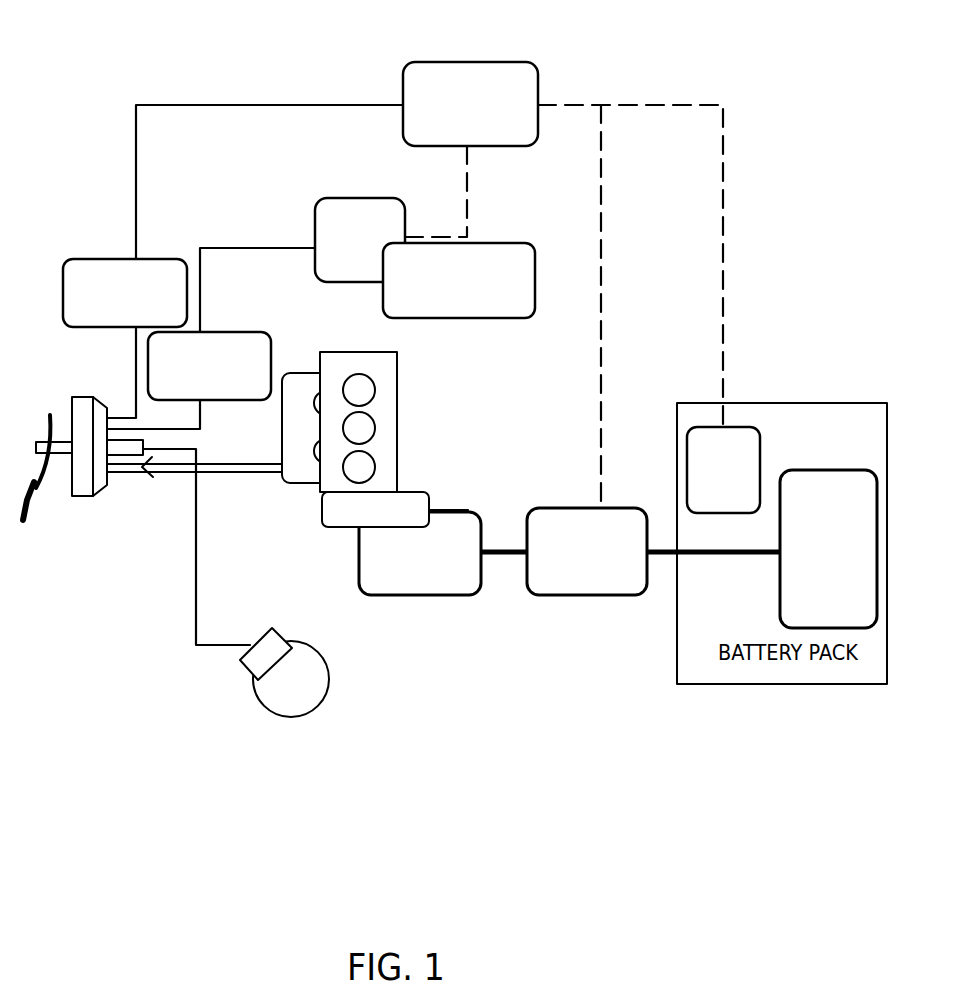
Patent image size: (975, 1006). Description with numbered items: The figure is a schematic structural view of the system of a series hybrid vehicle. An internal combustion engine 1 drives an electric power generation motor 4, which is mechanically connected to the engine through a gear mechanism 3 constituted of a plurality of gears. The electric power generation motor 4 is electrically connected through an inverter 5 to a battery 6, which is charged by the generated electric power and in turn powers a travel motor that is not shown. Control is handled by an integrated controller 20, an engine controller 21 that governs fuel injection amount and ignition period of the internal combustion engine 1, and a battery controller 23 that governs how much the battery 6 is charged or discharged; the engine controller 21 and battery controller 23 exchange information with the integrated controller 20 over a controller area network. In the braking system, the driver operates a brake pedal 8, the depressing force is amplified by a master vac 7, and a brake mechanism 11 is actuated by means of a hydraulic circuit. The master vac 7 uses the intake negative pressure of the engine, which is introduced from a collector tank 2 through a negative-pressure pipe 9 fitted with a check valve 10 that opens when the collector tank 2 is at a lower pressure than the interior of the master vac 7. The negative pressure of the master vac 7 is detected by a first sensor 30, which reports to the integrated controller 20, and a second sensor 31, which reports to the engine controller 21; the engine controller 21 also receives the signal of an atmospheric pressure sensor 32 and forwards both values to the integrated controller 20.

The internal combustion engine 1 is at (398, 370).
The collector tank 2 is at (298, 488).
The gear mechanism 3 is at (420, 487).
The electric power generation motor 4 is at (465, 507).
The inverter 5 is at (609, 508).
The battery 6 is at (804, 470).
The master vac 7 is at (87, 497).
The brake pedal 8 is at (47, 420).
The negative-pressure pipe 9 is at (247, 472).
The check valve 10 is at (148, 478).
The brake mechanism 11 is at (278, 733).
The integrated controller 20 is at (415, 62).
The engine controller 21 is at (304, 198).
The battery controller 23 is at (747, 428).
The first sensor 30 is at (80, 259).
The second sensor 31 is at (248, 332).
The atmospheric pressure sensor 32 is at (495, 318).